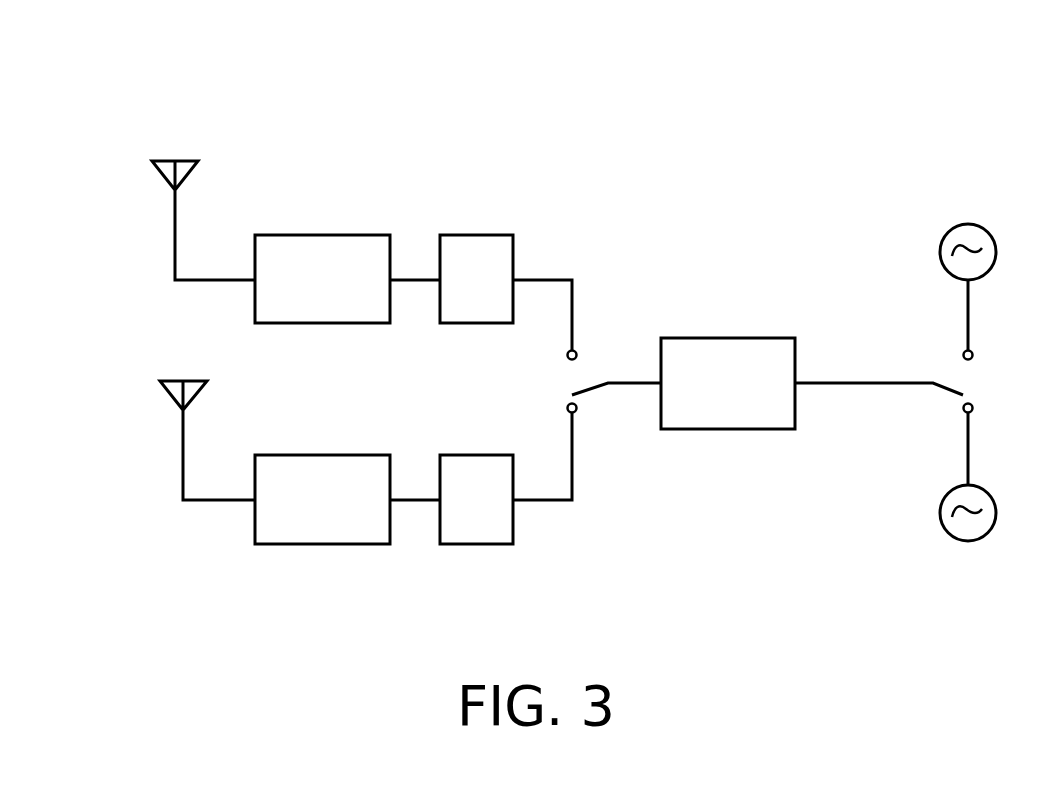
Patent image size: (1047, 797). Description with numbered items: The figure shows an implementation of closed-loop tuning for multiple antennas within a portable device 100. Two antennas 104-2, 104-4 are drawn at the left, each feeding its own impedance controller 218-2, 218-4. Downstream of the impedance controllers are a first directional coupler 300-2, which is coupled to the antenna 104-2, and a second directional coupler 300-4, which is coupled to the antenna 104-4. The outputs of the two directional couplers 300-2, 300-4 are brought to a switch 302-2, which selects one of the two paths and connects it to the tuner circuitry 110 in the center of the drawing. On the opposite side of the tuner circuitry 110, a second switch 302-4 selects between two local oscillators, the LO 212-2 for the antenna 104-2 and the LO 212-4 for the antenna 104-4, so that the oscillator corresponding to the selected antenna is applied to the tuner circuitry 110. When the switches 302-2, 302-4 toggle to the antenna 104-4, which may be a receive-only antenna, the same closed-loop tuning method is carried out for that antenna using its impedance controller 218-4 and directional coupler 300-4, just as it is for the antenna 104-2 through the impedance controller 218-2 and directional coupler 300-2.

The portable device 100 is at (130, 70).
The antenna 104-2 is at (152, 158).
The antenna 104-4 is at (160, 378).
The impedance controller 218-2 is at (347, 279).
The impedance controller 218-4 is at (347, 499).
The first directional coupler 300-2 is at (506, 292).
The second directional coupler 300-4 is at (506, 478).
The switch 302-2 is at (569, 392).
The switch 302-4 is at (966, 388).
The tuner circuitry 110 is at (728, 383).
The LO 212-2 is at (951, 225).
The LO 212-4 is at (951, 491).